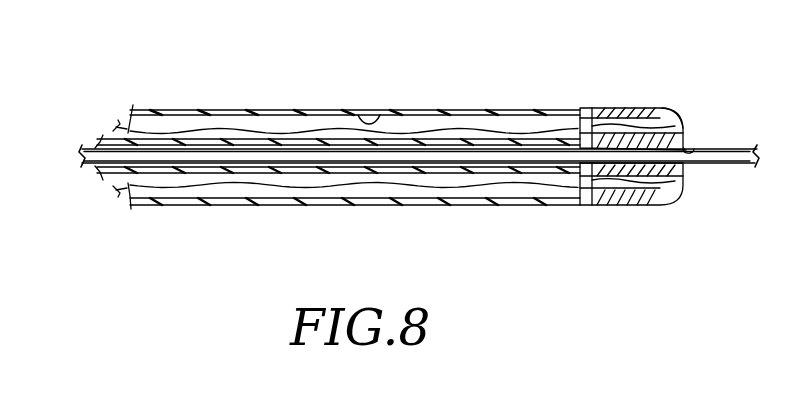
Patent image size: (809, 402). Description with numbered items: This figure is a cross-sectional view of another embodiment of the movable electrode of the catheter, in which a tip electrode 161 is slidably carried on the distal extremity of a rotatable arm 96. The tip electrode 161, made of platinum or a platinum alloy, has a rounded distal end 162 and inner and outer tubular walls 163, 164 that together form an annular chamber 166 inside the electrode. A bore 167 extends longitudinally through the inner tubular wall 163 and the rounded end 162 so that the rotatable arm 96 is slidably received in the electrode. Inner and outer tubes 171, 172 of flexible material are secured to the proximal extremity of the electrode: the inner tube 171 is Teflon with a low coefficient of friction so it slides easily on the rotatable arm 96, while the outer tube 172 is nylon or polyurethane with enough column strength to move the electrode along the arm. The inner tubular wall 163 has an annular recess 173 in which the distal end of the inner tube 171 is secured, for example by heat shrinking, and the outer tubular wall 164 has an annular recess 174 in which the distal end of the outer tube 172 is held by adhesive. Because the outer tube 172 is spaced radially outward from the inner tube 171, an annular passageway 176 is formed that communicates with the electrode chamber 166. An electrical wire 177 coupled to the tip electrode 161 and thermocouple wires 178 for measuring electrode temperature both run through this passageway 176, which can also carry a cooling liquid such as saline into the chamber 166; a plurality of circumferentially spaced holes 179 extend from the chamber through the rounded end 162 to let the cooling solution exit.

The rotatable arm 96 is at (727, 158).
The tip electrode 161 is at (680, 96).
The rounded distal end 162 is at (675, 112).
The inner tubular wall 163 is at (640, 178).
The outer tubular wall 164 is at (640, 205).
The annular chamber 166 is at (637, 120).
The bore 167 is at (690, 152).
The inner tube 171 is at (274, 172).
The outer tube 172 is at (372, 200).
The annular recess 173 is at (582, 165).
The annular recess 174 is at (628, 126).
The annular passageway 176 is at (372, 120).
The electrical wire 177 is at (457, 188).
The thermocouple wires 178 is at (173, 110).
The ports or holes 179 is at (683, 186).